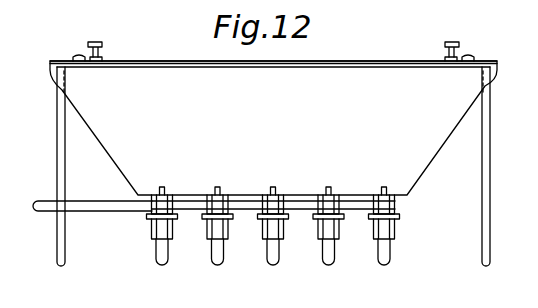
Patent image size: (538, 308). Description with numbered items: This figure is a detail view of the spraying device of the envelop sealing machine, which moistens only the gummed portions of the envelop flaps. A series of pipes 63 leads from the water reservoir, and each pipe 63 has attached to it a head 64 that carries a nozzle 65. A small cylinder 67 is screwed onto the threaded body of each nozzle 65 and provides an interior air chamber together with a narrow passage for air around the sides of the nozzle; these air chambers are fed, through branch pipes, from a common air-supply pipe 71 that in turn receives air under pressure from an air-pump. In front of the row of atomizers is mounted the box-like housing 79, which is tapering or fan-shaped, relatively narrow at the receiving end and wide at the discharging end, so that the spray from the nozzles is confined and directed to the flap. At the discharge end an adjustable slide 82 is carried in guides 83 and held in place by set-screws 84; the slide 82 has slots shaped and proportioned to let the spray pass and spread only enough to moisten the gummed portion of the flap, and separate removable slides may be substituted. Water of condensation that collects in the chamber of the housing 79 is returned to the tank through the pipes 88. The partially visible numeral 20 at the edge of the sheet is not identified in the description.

The hopper 79 is at (273, 128).
The rim 82 is at (158, 60).
The hook bracket 83 is at (466, 56).
The bolt 84 is at (448, 40).
The supporting post 88 is at (482, 170).
The pipe 71 is at (43, 200).
The pin 65 is at (385, 186).
The valve body 67 is at (400, 199).
The nozzle sleeve 64 is at (398, 232).
The nozzle 63 is at (332, 265).
The frame 20 is at (529, 197).